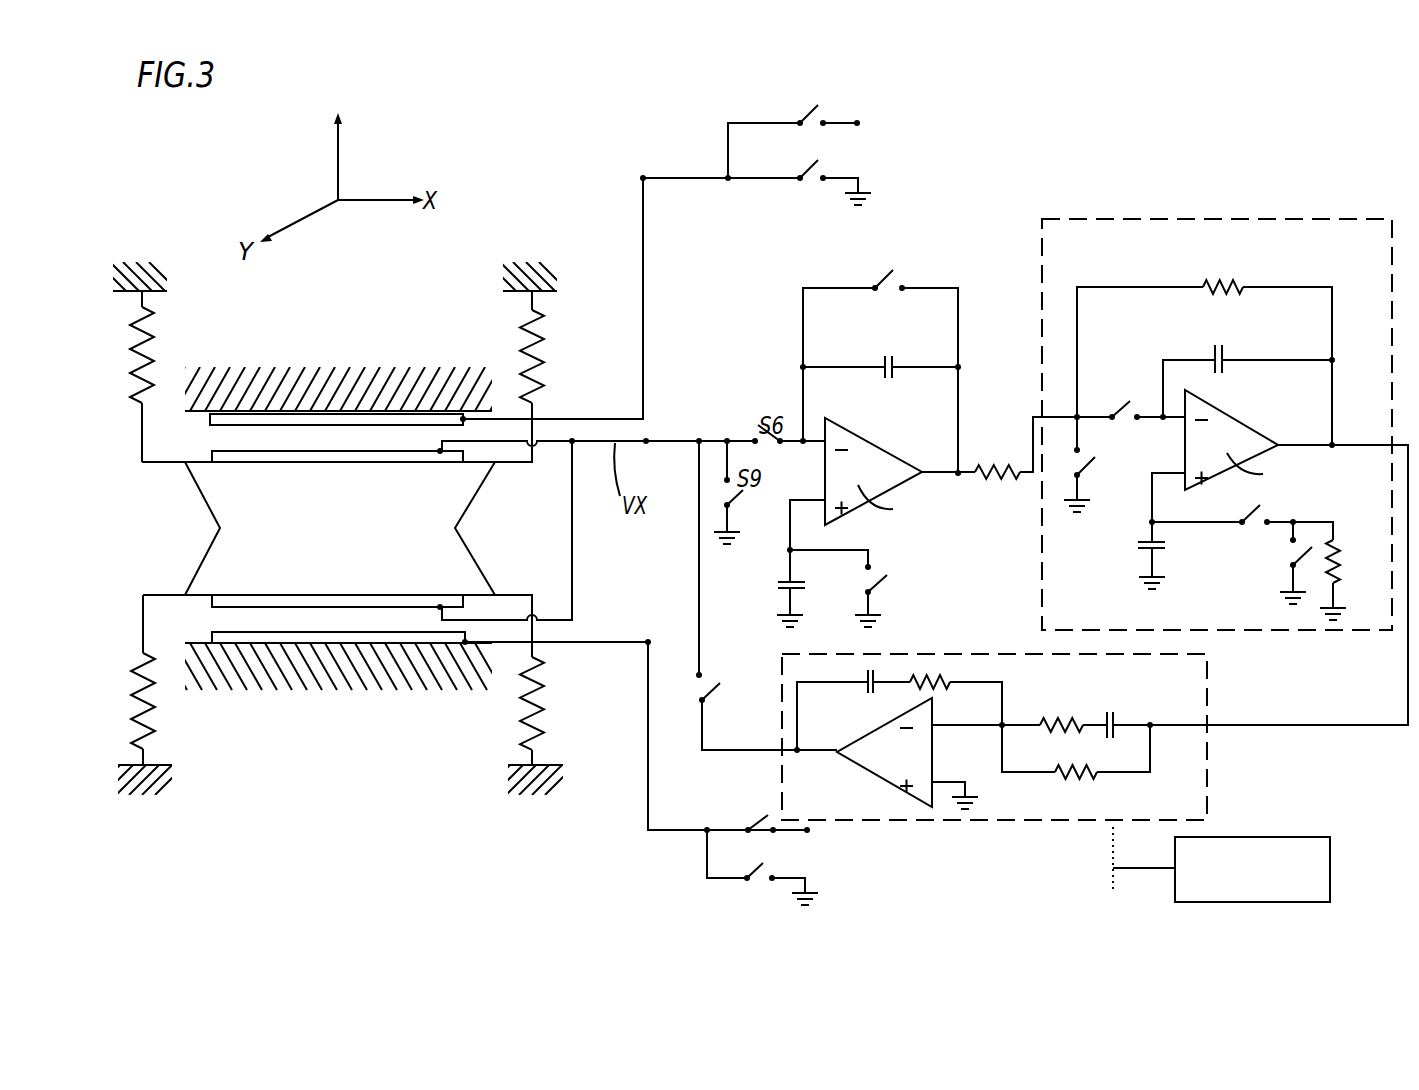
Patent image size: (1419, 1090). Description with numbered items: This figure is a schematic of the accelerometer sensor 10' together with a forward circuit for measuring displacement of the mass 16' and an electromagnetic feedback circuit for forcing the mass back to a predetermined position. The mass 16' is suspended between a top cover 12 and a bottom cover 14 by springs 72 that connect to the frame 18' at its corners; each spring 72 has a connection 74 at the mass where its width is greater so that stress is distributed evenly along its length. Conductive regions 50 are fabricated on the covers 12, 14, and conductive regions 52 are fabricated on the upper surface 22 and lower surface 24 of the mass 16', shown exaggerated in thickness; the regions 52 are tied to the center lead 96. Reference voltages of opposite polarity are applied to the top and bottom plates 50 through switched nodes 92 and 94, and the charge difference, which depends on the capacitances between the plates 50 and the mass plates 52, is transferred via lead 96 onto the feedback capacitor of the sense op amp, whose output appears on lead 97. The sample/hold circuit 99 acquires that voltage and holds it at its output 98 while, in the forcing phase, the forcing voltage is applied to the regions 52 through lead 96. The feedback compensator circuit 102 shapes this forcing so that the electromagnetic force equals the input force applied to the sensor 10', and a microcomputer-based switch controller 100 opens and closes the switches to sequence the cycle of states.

The sensor 10' is at (593, 352).
The top cover 12 is at (287, 387).
The bottom cover 14 is at (322, 667).
The mass 16' is at (340, 528).
The frame 18' is at (333, 527).
The upper surface 22 is at (195, 460).
The lower surface 24 is at (200, 595).
The conductive regions 50 is at (392, 417).
The conductive regions 52 is at (360, 460).
The spring 72 is at (147, 345).
The connection 74 is at (545, 707).
The drive voltage switching node 92 is at (657, 178).
The negative drive switching node 94 is at (687, 830).
The center lead 96 is at (660, 441).
The output lead 97 is at (958, 475).
The output 98 is at (1360, 445).
The sample/hold circuit 99 is at (1177, 217).
The switch controller 100 is at (1330, 873).
The feedback compensator circuit 102 is at (1222, 783).